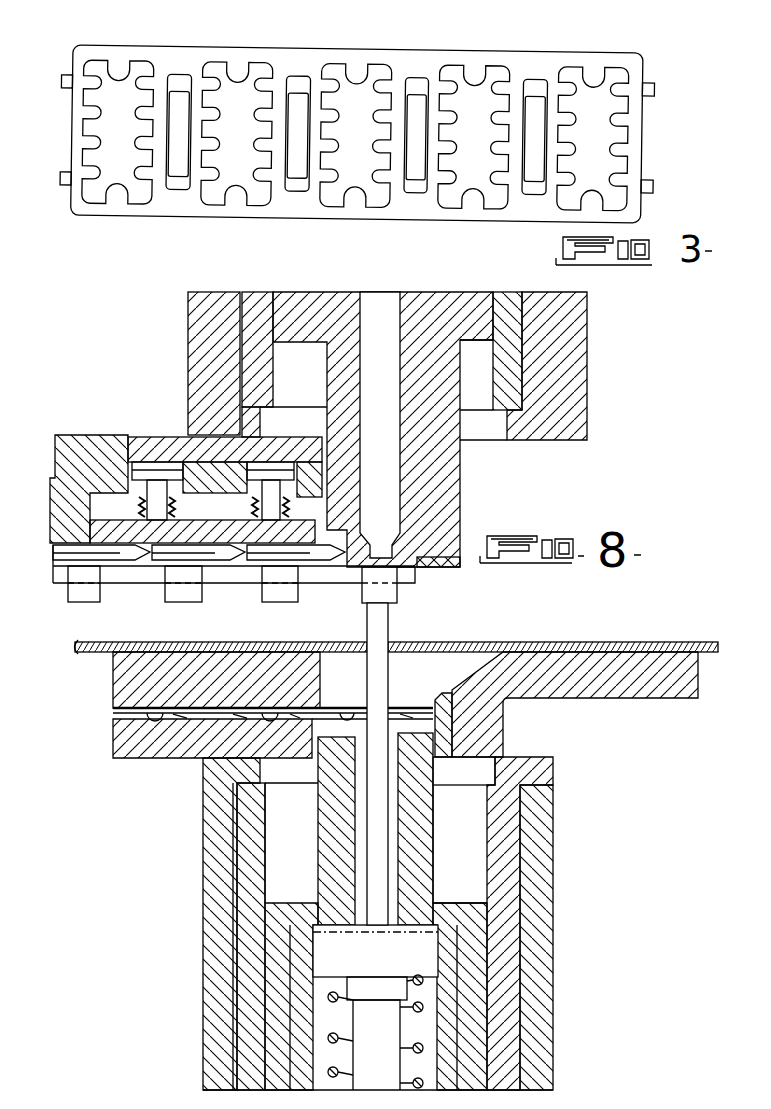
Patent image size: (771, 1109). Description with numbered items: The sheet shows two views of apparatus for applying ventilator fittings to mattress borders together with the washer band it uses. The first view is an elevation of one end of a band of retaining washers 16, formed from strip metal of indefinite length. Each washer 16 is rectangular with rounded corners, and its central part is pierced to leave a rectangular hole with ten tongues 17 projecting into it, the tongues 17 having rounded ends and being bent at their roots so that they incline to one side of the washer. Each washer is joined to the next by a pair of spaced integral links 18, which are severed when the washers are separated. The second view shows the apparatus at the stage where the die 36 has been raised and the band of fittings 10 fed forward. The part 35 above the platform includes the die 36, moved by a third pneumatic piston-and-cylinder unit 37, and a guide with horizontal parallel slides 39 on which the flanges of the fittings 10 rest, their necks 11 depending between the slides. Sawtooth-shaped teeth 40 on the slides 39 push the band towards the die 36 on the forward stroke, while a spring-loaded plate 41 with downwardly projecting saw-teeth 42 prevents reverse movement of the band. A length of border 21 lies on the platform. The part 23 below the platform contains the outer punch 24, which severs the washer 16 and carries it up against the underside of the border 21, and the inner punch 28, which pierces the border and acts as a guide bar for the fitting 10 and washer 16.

In FIG. 3, the retaining washer 16 is at (202, 46).
In FIG. 3, the tongues 17 is at (126, 112).
In FIG. 3, the integral links 18 is at (179, 190).
In FIG. 8, the third pneumatic piston-and-cylinder unit 37 is at (493, 282).
In FIG. 8, the part of the apparatus above the platform 35 is at (500, 452).
In FIG. 8, the die 36 is at (410, 550).
In FIG. 8, the spring-loaded plate 41 is at (62, 526).
In FIG. 8, the saw-teeth 42 is at (244, 548).
In FIG. 8, the slides 39 is at (123, 576).
In FIG. 8, the teeth 40 is at (244, 568).
In FIG. 8, the fitting 10 is at (280, 604).
In FIG. 8, the neck portion 11 is at (362, 598).
In FIG. 8, the inner punch 28 is at (389, 630).
In FIG. 8, the border 21 is at (497, 614).
In FIG. 8, the outer punch 24 is at (331, 737).
In FIG. 8, the part of the apparatus below the platform 23 is at (553, 926).